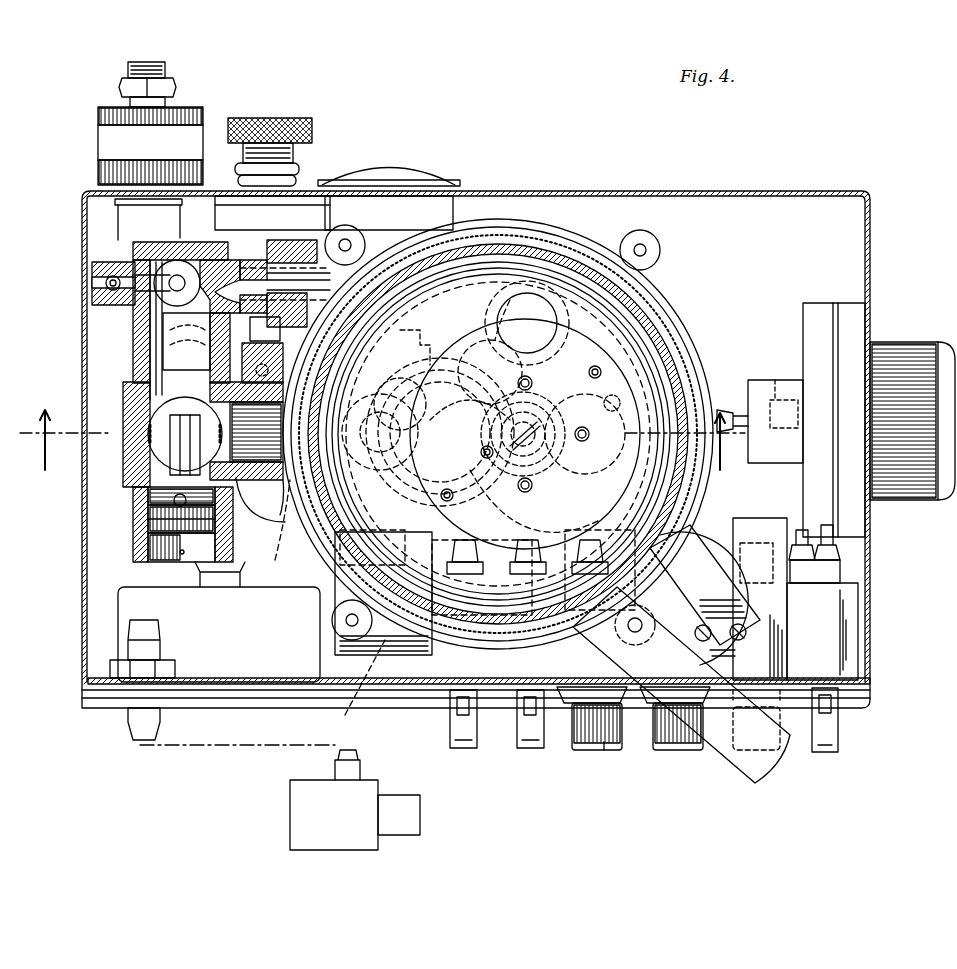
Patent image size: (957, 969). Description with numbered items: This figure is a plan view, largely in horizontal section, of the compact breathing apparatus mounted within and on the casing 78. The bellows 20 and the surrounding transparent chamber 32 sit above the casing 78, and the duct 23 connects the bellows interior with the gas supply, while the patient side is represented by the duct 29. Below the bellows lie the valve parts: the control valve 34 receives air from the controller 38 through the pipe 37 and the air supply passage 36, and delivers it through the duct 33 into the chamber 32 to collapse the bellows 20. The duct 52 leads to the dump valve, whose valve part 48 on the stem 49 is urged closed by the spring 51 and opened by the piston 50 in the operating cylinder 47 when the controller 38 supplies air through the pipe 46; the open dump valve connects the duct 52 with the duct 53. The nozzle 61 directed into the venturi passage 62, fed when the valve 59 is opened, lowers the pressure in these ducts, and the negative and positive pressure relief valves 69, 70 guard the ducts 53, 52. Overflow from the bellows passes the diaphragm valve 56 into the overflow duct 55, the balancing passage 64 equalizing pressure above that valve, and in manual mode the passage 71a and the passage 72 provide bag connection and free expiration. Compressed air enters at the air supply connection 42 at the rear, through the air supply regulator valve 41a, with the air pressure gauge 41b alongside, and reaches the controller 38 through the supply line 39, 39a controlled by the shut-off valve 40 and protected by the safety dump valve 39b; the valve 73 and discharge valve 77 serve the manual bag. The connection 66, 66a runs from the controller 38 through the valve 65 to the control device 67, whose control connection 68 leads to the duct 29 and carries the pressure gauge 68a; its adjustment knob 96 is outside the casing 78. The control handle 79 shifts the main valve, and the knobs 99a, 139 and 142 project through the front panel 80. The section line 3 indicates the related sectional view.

The air supply connection 42 is at (142, 62).
The air supply regulator valve 41a is at (286, 118).
The air pressure gauge 41b is at (394, 168).
The duct 23 is at (505, 300).
The diaphragm valve 56 is at (532, 322).
The casing 78 is at (745, 191).
The duct 53 is at (140, 250).
The negative pressure relief valve 69 is at (183, 270).
The venturi passage 62 is at (242, 262).
The nozzle 61 is at (140, 314).
The dump valve part 48 is at (135, 372).
The positive pressure relief valve 70 is at (145, 420).
The spring 51 is at (125, 428).
The section line 3- 3 is at (382, 444).
The stem 49 is at (175, 452).
The pipe 46 is at (135, 498).
The piston 50 is at (150, 521).
The operating cylinder 47 is at (135, 544).
The duct 52 is at (286, 500).
The air supply passage 36 is at (276, 523).
The control valve 34 is at (436, 340).
The passage 72 is at (393, 401).
The duct 33 is at (380, 432).
The overflow duct 55 is at (525, 434).
The supply line 39a is at (553, 421).
The air supply line 39 is at (470, 454).
The safety dump valve 39b is at (535, 501).
The connection 66 is at (487, 552).
The bellows 20 is at (638, 318).
The chamber 32 is at (655, 343).
The balancing passage 64 is at (660, 366).
The connection 66a is at (724, 408).
The control connection 68 is at (775, 380).
The control device 67 is at (855, 333).
The adjustment knob 96 is at (905, 500).
The controller 38 is at (724, 511).
The pipe 37 is at (742, 522).
The passage 71a is at (379, 632).
The front panel 80 is at (392, 686).
The discharge valve 77 is at (470, 750).
The valve 73 is at (532, 750).
The shut-off valve 40 is at (578, 732).
The knob 142 is at (612, 750).
The operating knob 99a is at (672, 752).
The knob 139 is at (748, 752).
The control handle 79 is at (773, 772).
The valve 59 is at (790, 745).
The valve 65 is at (840, 726).
The pressure gauge 68a is at (185, 740).
The duct 29 is at (290, 808).